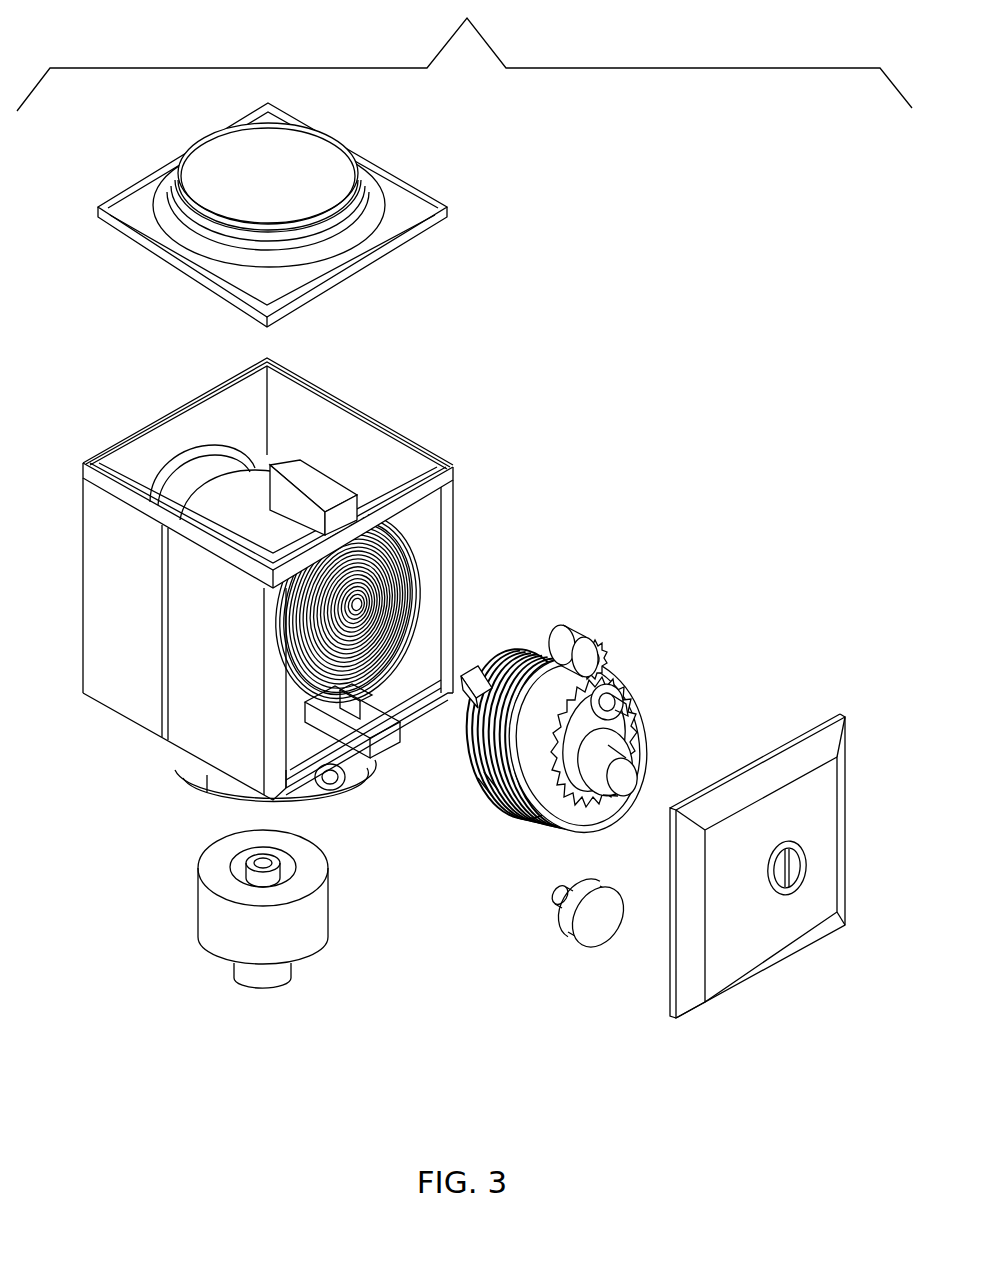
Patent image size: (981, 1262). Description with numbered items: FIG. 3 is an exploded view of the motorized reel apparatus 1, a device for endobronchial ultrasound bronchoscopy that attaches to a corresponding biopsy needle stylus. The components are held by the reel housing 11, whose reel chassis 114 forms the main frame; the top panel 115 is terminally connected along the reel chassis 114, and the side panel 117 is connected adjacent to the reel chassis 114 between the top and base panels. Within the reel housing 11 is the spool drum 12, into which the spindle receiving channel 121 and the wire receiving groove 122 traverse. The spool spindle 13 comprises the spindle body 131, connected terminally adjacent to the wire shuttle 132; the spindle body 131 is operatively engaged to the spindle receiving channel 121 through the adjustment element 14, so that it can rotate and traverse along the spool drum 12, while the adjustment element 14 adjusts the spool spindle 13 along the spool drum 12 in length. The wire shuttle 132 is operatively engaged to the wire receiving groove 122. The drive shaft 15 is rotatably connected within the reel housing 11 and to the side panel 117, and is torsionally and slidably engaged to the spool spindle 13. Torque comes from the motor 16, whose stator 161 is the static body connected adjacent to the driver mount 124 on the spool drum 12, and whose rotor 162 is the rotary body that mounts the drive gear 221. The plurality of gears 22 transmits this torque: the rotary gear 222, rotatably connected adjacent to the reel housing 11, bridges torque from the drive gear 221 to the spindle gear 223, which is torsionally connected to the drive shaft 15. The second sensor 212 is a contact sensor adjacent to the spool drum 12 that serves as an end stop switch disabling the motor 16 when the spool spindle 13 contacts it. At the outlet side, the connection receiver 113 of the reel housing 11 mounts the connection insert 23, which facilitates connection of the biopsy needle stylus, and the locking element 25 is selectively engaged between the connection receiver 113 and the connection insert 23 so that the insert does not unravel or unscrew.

The motorized reel apparatus 1 is at (464, 55).
The reel housing 11 is at (396, 595).
The connection receiver 113 is at (183, 772).
The reel chassis 114 is at (417, 432).
The top panel 115 is at (413, 187).
The side panel 117 is at (845, 722).
The spool drum 12 is at (412, 546).
The spindle receiving channel 121 is at (326, 579).
The wire receiving groove 122 is at (402, 573).
The driver mount 124 is at (270, 484).
The spool spindle 13 is at (575, 710).
The spindle body 131 is at (467, 728).
The wire shuttle 132 is at (493, 780).
The adjustment element 14 is at (390, 600).
The drive shaft 15 is at (473, 673).
The motor 16 is at (607, 614).
The stator 161 is at (573, 632).
The rotor 162 is at (591, 655).
The second sensor 212 is at (372, 686).
The plurality of gears 22 is at (557, 737).
The drive gear 221 is at (612, 667).
The rotary gear 222 is at (650, 675).
The spindle gear 223 is at (633, 727).
The connection insert 23 is at (200, 897).
The locking element 25 is at (557, 926).